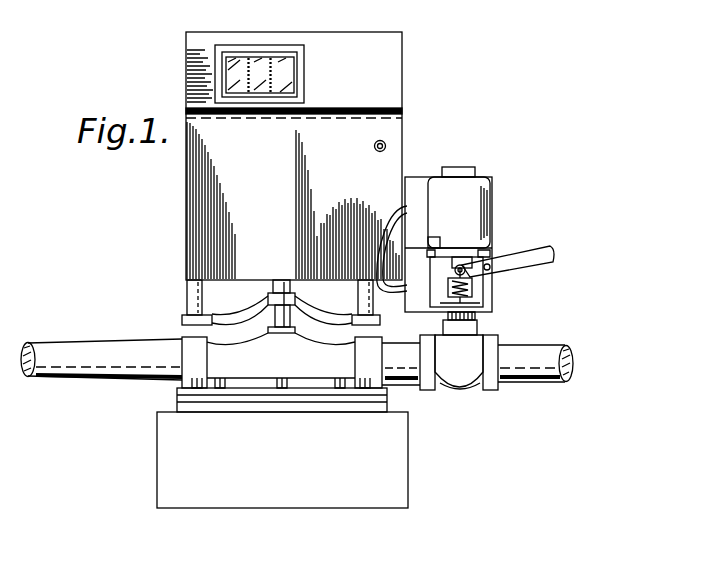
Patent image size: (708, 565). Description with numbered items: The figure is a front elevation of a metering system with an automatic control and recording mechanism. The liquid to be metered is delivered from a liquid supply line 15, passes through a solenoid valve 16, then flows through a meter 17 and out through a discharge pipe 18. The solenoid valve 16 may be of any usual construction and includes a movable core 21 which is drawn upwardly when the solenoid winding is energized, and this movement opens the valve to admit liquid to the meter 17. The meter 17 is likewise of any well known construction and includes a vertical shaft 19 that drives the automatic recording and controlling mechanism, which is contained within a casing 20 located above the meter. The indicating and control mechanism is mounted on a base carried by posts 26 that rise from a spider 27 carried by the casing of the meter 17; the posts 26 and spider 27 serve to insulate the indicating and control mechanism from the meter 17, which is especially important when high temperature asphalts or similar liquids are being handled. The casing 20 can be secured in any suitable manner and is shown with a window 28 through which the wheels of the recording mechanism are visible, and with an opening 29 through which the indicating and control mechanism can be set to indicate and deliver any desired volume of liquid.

The liquid supply line 15 is at (545, 352).
The solenoid valve 16 is at (488, 326).
The meter 17 is at (419, 461).
The discharge pipe 18 is at (77, 350).
The vertical shaft 19 is at (281, 284).
The casing 20 is at (394, 45).
The movable core 21 is at (462, 262).
The posts 26 is at (186, 297).
The spider 27 is at (312, 309).
The window 28 is at (292, 72).
The opening 29 is at (385, 143).